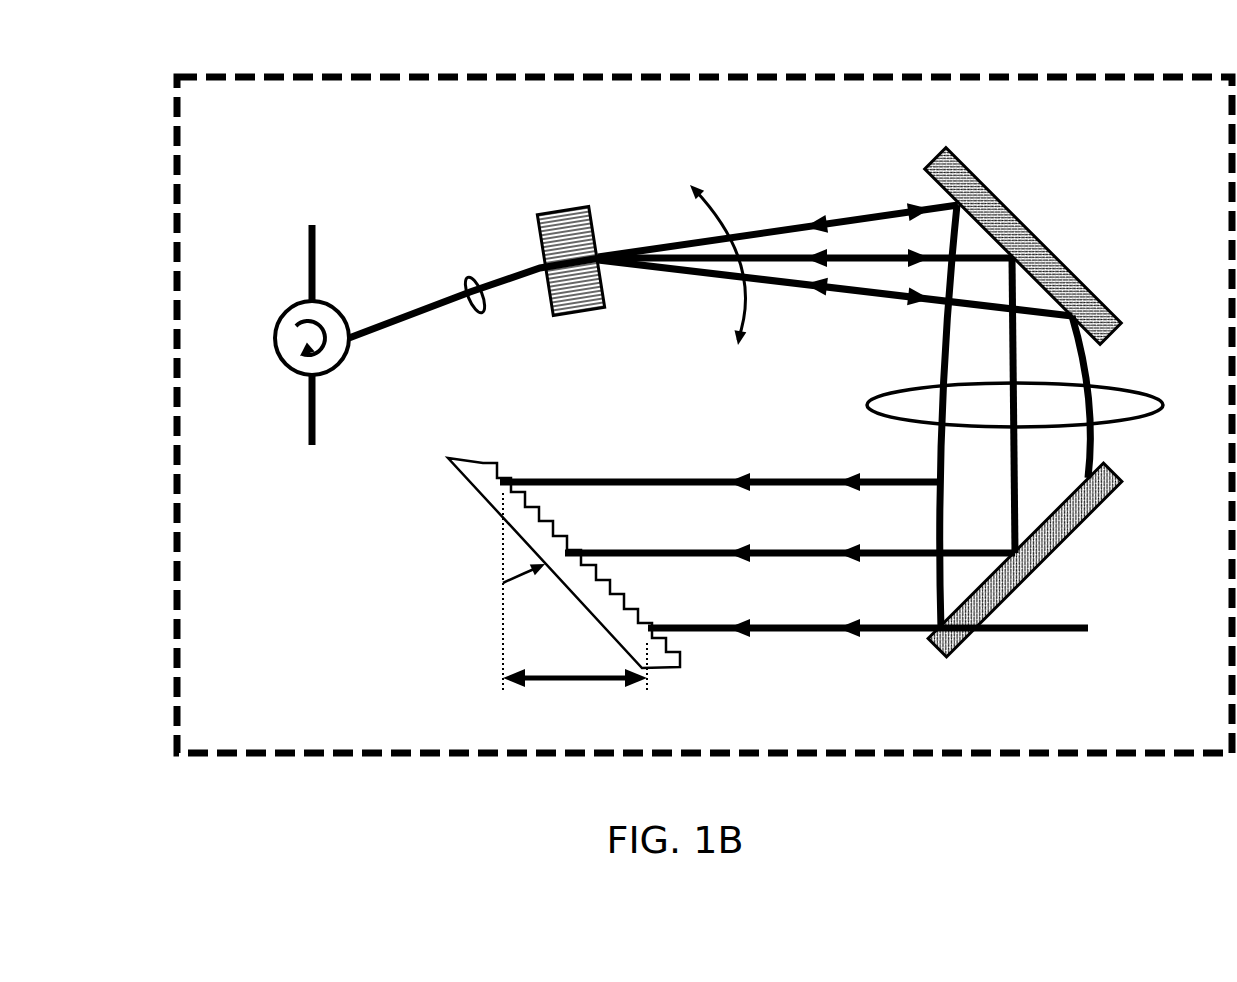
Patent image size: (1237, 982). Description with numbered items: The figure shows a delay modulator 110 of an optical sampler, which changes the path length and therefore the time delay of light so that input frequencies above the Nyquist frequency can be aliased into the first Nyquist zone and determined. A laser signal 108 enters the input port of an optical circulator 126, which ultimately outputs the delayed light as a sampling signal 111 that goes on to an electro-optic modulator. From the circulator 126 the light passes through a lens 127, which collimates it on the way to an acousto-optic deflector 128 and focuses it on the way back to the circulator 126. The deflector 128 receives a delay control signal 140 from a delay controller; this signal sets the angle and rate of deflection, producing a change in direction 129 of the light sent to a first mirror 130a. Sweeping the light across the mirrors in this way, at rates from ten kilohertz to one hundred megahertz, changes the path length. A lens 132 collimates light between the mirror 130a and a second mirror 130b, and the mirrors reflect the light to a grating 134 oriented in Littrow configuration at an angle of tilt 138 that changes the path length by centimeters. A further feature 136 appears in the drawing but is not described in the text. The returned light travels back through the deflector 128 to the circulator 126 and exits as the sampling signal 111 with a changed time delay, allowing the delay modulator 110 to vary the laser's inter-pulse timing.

The delay modulator 110 is at (1160, 72).
The laser signal 108 is at (302, 148).
The optical circulator 126 is at (263, 335).
The sampling signal 111 is at (288, 522).
The lens 127 is at (455, 283).
The acousto-optic deflector 128 is at (562, 387).
The delay control signal 140 is at (523, 147).
The change in direction 129 is at (722, 202).
The mirror 130a is at (997, 210).
The mirror 130b is at (1010, 582).
The lens 132 is at (898, 377).
The grating 134 is at (648, 677).
The angle of tilt 138 is at (492, 562).
The path change 136 is at (543, 683).